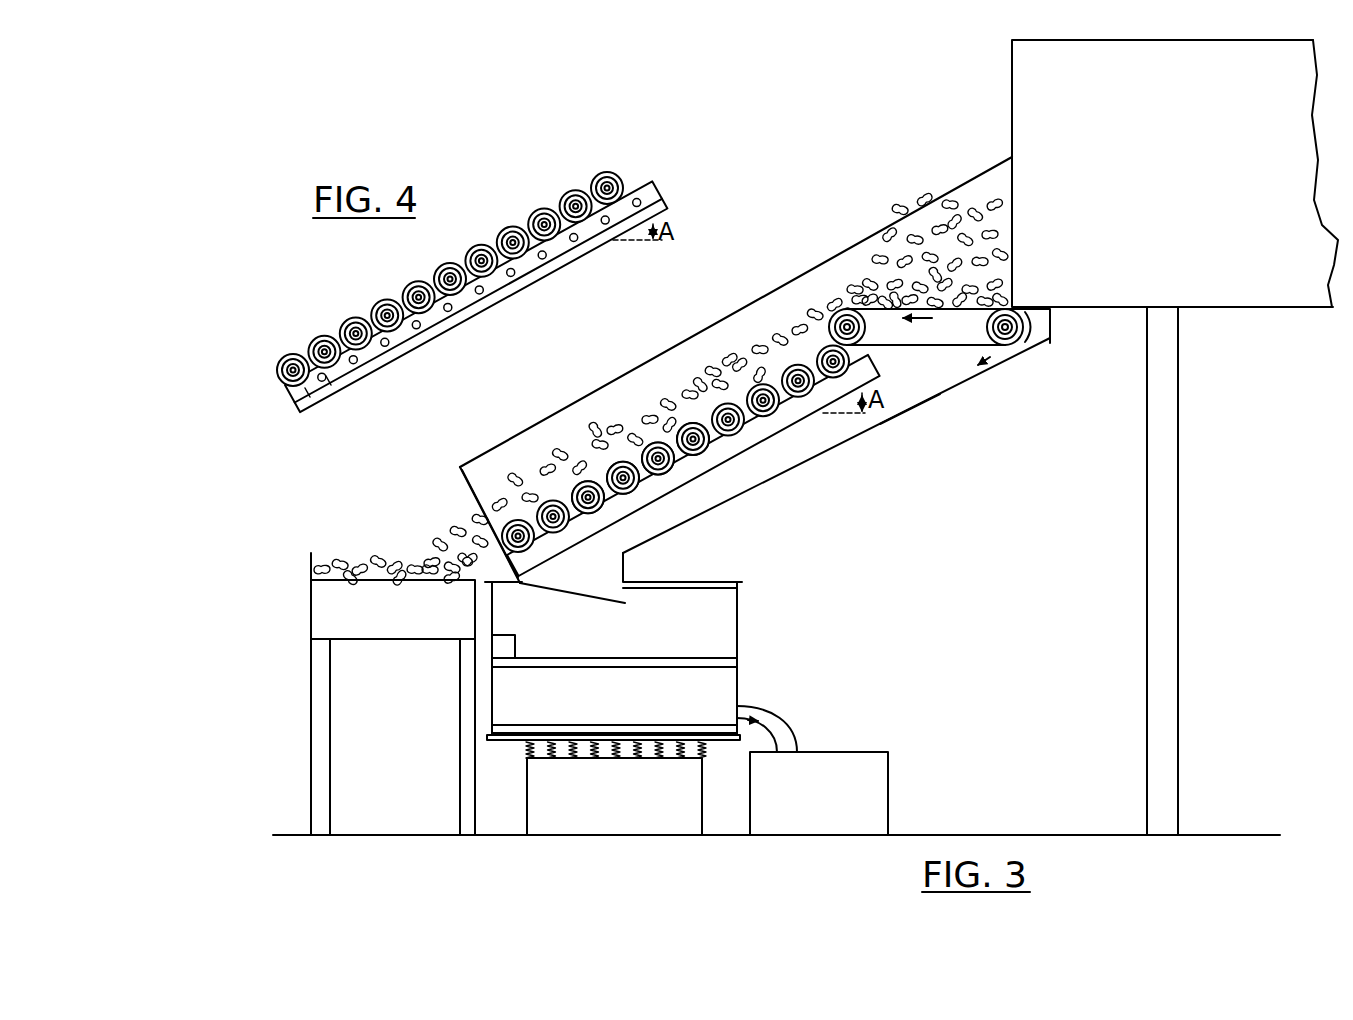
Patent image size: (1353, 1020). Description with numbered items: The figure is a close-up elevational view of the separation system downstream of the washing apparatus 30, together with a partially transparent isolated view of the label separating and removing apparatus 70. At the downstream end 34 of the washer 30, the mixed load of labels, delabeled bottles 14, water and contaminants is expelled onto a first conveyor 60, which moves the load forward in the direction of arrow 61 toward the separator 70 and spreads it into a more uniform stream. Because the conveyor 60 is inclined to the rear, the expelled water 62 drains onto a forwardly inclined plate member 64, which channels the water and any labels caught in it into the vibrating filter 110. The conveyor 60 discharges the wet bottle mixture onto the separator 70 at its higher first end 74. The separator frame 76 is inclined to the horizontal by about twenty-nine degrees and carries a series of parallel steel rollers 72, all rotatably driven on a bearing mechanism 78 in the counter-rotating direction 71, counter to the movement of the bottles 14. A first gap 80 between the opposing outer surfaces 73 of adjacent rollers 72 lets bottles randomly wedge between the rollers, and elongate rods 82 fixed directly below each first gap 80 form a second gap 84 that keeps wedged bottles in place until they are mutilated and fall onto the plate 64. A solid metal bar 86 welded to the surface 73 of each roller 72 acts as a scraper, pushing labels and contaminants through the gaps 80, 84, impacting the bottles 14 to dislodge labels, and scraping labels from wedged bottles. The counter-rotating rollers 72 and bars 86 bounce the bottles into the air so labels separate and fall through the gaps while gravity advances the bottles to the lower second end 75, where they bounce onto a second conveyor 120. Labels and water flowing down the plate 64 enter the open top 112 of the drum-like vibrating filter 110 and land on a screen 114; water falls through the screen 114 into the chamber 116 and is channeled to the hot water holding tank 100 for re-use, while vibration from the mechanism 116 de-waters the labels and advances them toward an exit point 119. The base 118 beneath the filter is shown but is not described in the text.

In FIG. 3, the delabeled bottles 14 is at (712, 368).
In FIG. 3, the washing apparatus 30 is at (1175, 181).
In FIG. 3, the downstream end 34 is at (978, 98).
In FIG. 3, the first conveyor 60 is at (964, 350).
In FIG. 3, the direction arrow 61 is at (933, 325).
In FIG. 3, the expelled water 62 is at (1046, 330).
In FIG. 3, the plate member 64 is at (855, 438).
In FIG. 3, the label separating and removing apparatus 70 is at (741, 278).
In FIG. 4, the label separating and removing apparatus 70 is at (563, 160).
In FIG. 3, the counter-rotating direction 71 is at (580, 432).
In FIG. 4, the counter-rotating direction 71 is at (447, 251).
In FIG. 3, the rollers 72 is at (677, 400).
In FIG. 4, the rollers 72 is at (545, 226).
In FIG. 3, the outer surfaces 73 is at (627, 417).
In FIG. 4, the outer surfaces 73 is at (330, 342).
In FIG. 3, the first end 74 is at (906, 410).
In FIG. 3, the second end 75 is at (469, 458).
In FIG. 3, the separator frame 76 is at (874, 363).
In FIG. 4, the separator frame 76 is at (661, 190).
In FIG. 4, the bearing mechanism 78 is at (508, 276).
In FIG. 4, the first gap 80 is at (290, 345).
In FIG. 4, the elongate rods 82 is at (381, 350).
In FIG. 4, the second gap 84 is at (329, 390).
In FIG. 4, the solid metal bar 86 is at (378, 291).
In FIG. 3, the hot water holding tank 100 is at (844, 804).
In FIG. 3, the vibrating filter 110 is at (740, 622).
In FIG. 3, the open top 112 is at (700, 580).
In FIG. 3, the screen 114 is at (738, 660).
In FIG. 3, the chamber 116 is at (735, 690).
In FIG. 3, the base plate with springs 118 is at (525, 744).
In FIG. 3, the exit point 119 is at (518, 648).
In FIG. 3, the second conveyor 120 is at (336, 607).